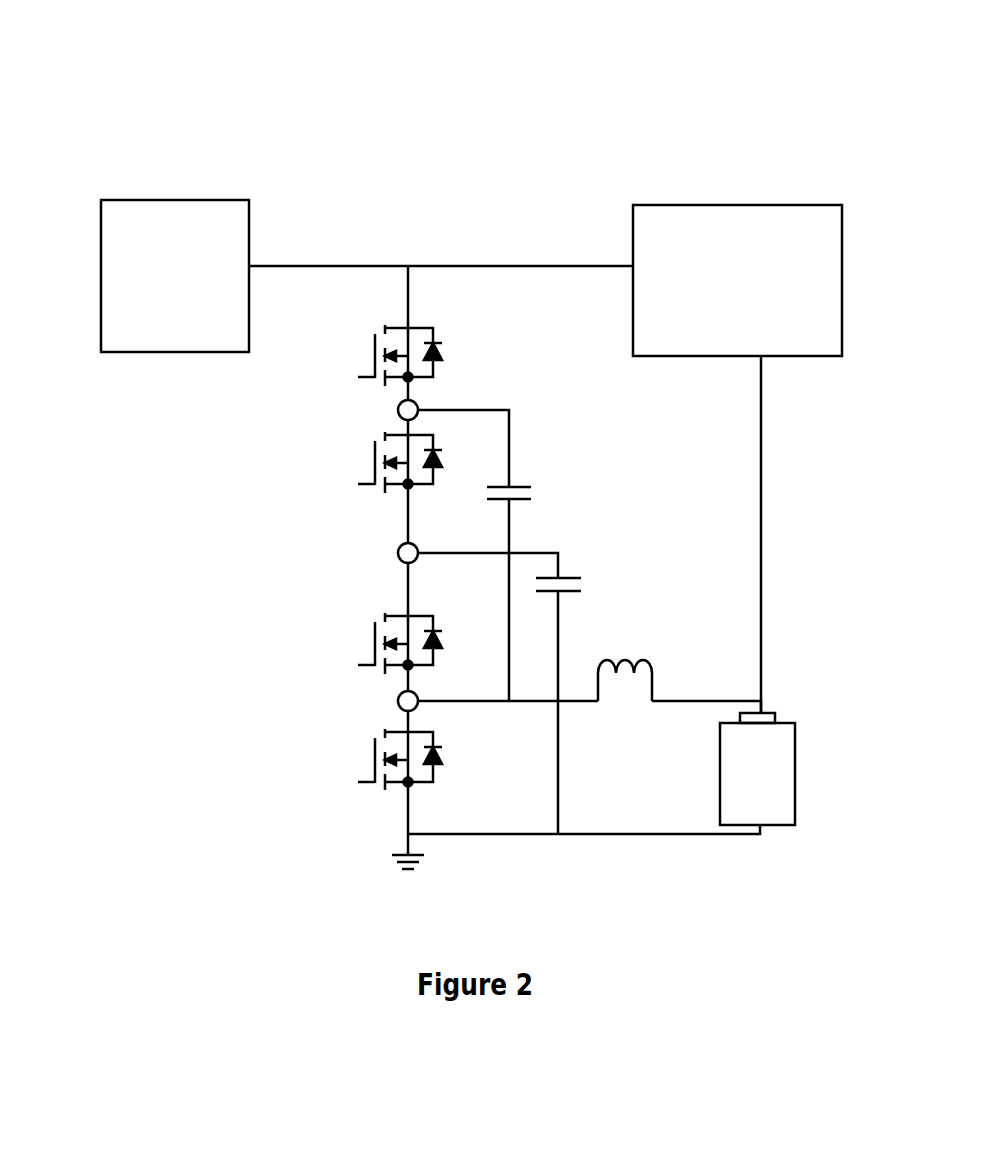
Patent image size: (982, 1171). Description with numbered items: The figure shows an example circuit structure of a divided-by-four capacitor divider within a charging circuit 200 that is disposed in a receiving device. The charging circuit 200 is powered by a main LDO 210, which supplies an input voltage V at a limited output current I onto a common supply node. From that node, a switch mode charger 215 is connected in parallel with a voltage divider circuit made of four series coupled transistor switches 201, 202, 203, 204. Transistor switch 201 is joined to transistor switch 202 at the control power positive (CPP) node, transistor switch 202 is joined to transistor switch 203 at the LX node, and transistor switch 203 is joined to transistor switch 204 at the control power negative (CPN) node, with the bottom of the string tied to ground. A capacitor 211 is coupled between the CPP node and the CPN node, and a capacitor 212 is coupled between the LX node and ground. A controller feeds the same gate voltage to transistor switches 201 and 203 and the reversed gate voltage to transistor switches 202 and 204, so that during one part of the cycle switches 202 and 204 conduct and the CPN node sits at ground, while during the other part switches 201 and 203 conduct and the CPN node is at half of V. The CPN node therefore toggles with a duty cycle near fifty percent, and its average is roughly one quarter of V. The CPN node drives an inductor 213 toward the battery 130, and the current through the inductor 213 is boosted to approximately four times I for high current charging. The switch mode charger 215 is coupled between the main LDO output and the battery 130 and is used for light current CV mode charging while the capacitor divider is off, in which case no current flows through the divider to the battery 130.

The charging circuit 200 is at (415, 103).
The LDO 210 is at (197, 213).
The switch mode charger 215 is at (727, 195).
The transistor switch 201 is at (357, 345).
The transistor switch 202 is at (367, 457).
The transistor switch 203 is at (352, 645).
The transistor switch 204 is at (352, 748).
The capacitor 211 is at (538, 495).
The capacitor 212 is at (577, 579).
The inductor 213 is at (615, 701).
The battery 130 is at (788, 778).